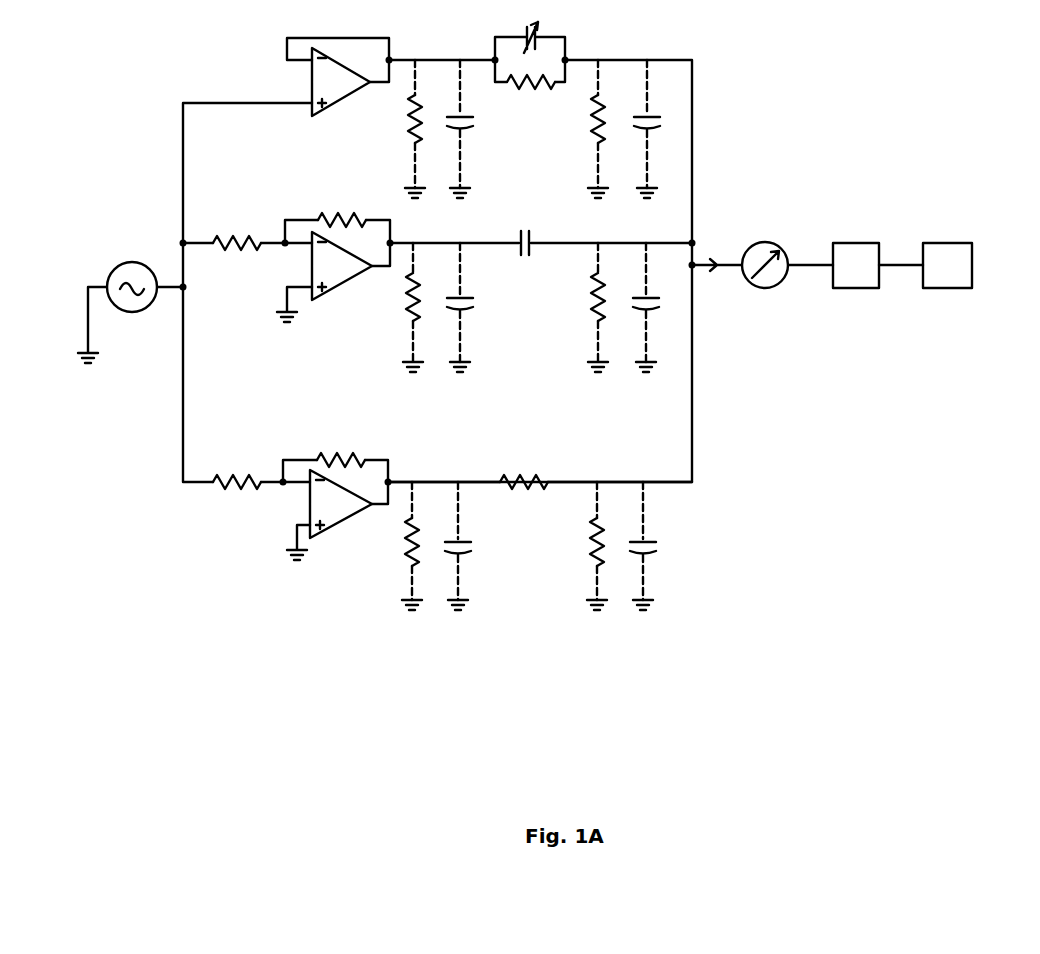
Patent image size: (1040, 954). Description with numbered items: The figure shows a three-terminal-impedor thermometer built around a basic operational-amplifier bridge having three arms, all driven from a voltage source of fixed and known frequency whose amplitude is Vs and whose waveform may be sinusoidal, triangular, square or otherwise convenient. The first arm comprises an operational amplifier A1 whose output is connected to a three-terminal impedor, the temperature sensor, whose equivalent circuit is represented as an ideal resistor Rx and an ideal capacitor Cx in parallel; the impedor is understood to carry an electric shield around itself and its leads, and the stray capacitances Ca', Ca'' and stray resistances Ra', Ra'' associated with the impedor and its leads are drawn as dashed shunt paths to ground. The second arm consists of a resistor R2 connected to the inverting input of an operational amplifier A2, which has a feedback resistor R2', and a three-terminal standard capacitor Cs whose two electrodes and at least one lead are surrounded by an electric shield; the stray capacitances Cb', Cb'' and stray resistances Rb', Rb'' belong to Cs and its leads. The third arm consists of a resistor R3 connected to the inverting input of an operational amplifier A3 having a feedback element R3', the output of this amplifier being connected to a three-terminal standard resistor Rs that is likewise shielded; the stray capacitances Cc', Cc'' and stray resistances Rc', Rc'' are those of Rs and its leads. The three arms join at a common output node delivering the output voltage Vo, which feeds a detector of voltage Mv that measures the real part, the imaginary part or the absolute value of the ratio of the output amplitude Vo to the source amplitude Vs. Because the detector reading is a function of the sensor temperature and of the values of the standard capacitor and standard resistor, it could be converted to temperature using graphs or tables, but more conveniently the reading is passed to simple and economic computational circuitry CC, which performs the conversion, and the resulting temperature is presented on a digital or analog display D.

The source voltage amplitude Vs is at (130, 303).
The output voltage Vo is at (717, 256).
The operational amplifier A1 is at (340, 77).
The operational amplifier A2 is at (335, 271).
The operational amplifier A3 is at (336, 510).
The resistor R2 is at (233, 229).
The feedback resistor R2' is at (337, 208).
The resistor R3 is at (233, 469).
The feedback element R3' is at (336, 448).
The ideal resistor Rx is at (530, 89).
The ideal capacitor Cx is at (530, 31).
The 3-terminal standard capacitor Cs is at (515, 232).
The 3-terminal standard resistor Rs is at (522, 469).
The stray resistance Ra' is at (404, 129).
The stray capacitance Ca' is at (473, 129).
The stray resistance Ra'' is at (586, 129).
The stray capacitance Ca'' is at (660, 129).
The stray resistance Rb' is at (403, 307).
The stray capacitance Cb' is at (473, 307).
The stray resistance Rb'' is at (585, 307).
The stray capacitance Cb'' is at (660, 307).
The stray resistance Rc' is at (402, 546).
The stray capacitance Cc' is at (470, 546).
The stray resistance Rc'' is at (584, 546).
The stray capacitance Cc'' is at (656, 546).
The detector of voltage Mv is at (787, 240).
The computational circuitry CC is at (859, 238).
The display D is at (959, 236).